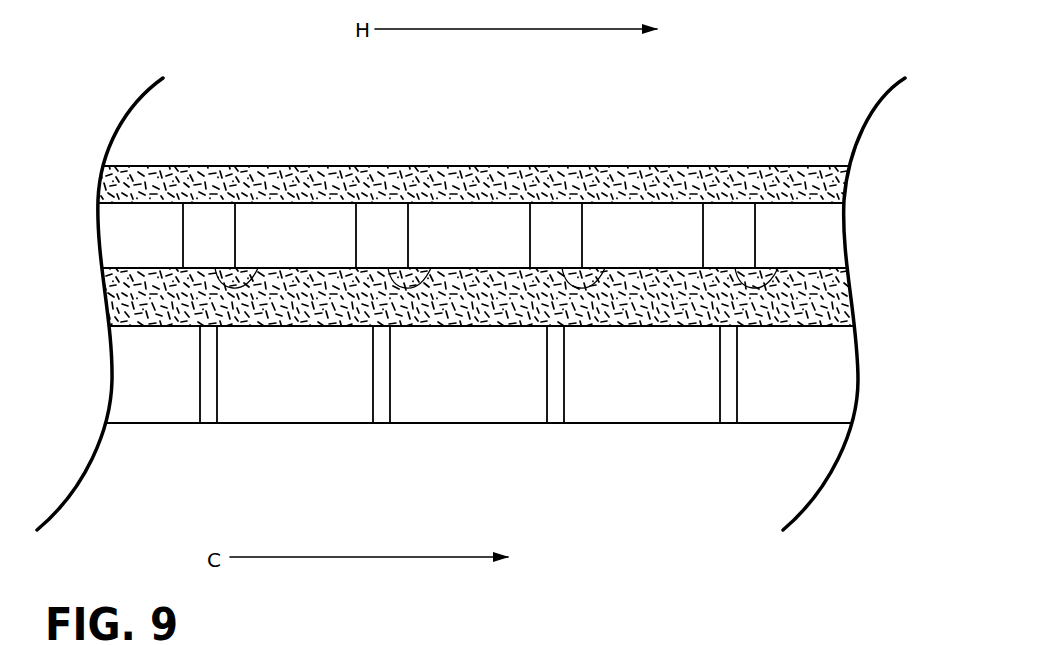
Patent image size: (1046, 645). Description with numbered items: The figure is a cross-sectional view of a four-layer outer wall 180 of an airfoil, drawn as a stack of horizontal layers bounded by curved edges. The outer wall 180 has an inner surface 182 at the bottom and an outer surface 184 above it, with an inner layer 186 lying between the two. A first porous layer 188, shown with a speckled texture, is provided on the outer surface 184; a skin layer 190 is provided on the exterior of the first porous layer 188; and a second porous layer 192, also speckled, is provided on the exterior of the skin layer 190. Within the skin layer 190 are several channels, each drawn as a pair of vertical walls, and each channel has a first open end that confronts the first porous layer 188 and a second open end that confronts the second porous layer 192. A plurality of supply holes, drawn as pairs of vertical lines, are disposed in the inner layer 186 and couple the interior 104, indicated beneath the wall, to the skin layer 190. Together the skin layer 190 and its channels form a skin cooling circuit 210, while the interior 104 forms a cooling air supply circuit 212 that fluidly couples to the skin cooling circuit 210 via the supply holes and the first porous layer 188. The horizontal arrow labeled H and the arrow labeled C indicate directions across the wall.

The interior 104 is at (585, 558).
The outer wall 180 is at (480, 301).
The inner surface 182 is at (432, 424).
The outer surface 184 is at (263, 327).
The inner layer 186 is at (480, 426).
The first porous layer 188 is at (855, 292).
The skin layer 190 is at (848, 235).
The second porous layer 192 is at (847, 185).
The skin cooling circuit 210 is at (122, 242).
The cooling air supply circuit 212 is at (122, 452).